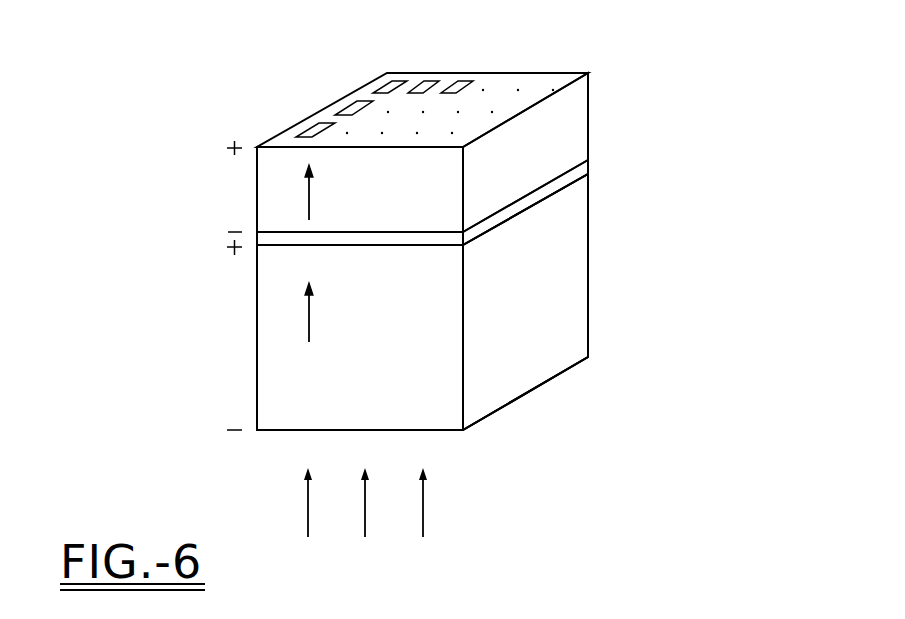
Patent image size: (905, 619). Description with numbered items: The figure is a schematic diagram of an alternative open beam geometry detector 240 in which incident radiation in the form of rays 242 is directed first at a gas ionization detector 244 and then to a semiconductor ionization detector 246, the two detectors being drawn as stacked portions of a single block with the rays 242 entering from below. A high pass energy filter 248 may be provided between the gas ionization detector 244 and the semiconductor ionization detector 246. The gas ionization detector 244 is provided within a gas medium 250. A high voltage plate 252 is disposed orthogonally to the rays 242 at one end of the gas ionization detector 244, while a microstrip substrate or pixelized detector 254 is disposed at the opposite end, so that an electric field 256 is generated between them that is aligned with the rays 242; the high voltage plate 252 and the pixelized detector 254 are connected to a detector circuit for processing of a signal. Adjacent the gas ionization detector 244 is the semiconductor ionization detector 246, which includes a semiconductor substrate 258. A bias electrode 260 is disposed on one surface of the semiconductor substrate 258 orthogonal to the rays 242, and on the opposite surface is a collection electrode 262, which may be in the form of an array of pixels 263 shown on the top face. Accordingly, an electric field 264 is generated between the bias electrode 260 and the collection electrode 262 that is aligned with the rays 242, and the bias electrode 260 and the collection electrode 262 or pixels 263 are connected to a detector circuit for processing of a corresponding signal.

The open beam geometry detector 240 is at (225, 78).
The rays 242 is at (423, 504).
The gas ionization detector 244 is at (249, 315).
The semiconductor ionization detector 246 is at (357, 83).
The high pass energy filter 248 is at (588, 165).
The gas medium 250 is at (561, 274).
The high voltage plate 252 is at (566, 371).
The microstrip substrate or pixelized detector 254 is at (566, 182).
The electric field 256 is at (309, 323).
The semiconductor substrate 258 is at (573, 113).
The bias electrode 260 is at (566, 167).
The collection electrode 262 is at (553, 72).
The pixels 263 is at (465, 84).
The electric field 264 is at (309, 195).